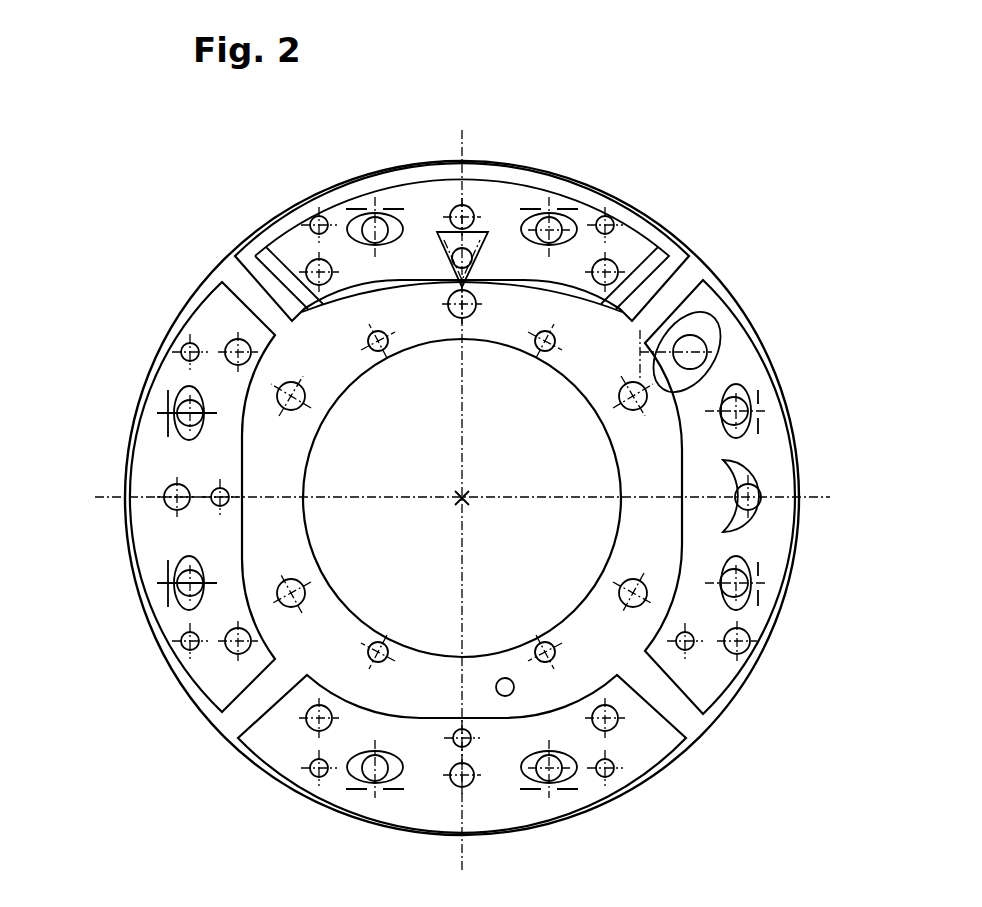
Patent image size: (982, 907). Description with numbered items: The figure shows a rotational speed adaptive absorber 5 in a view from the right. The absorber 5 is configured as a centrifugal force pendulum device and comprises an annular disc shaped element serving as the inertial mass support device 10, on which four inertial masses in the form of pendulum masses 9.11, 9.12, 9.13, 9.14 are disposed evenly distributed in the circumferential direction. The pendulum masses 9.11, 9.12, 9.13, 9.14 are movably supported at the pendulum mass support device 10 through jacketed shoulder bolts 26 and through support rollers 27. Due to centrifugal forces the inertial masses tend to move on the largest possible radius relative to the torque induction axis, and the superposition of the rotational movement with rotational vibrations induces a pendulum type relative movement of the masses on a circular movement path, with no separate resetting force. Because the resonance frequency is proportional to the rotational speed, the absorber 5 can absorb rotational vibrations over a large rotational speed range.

The rotational speed adaptive absorber 5 is at (566, 157).
The pendulum mass 9.11 is at (592, 226).
The pendulum mass 9.12 is at (778, 541).
The pendulum mass 9.13 is at (452, 788).
The pendulum mass 9.14 is at (152, 538).
The inertial mass support device 10 is at (240, 717).
The jacketed shoulder bolt 26 is at (307, 725).
The support roller 27 is at (378, 772).